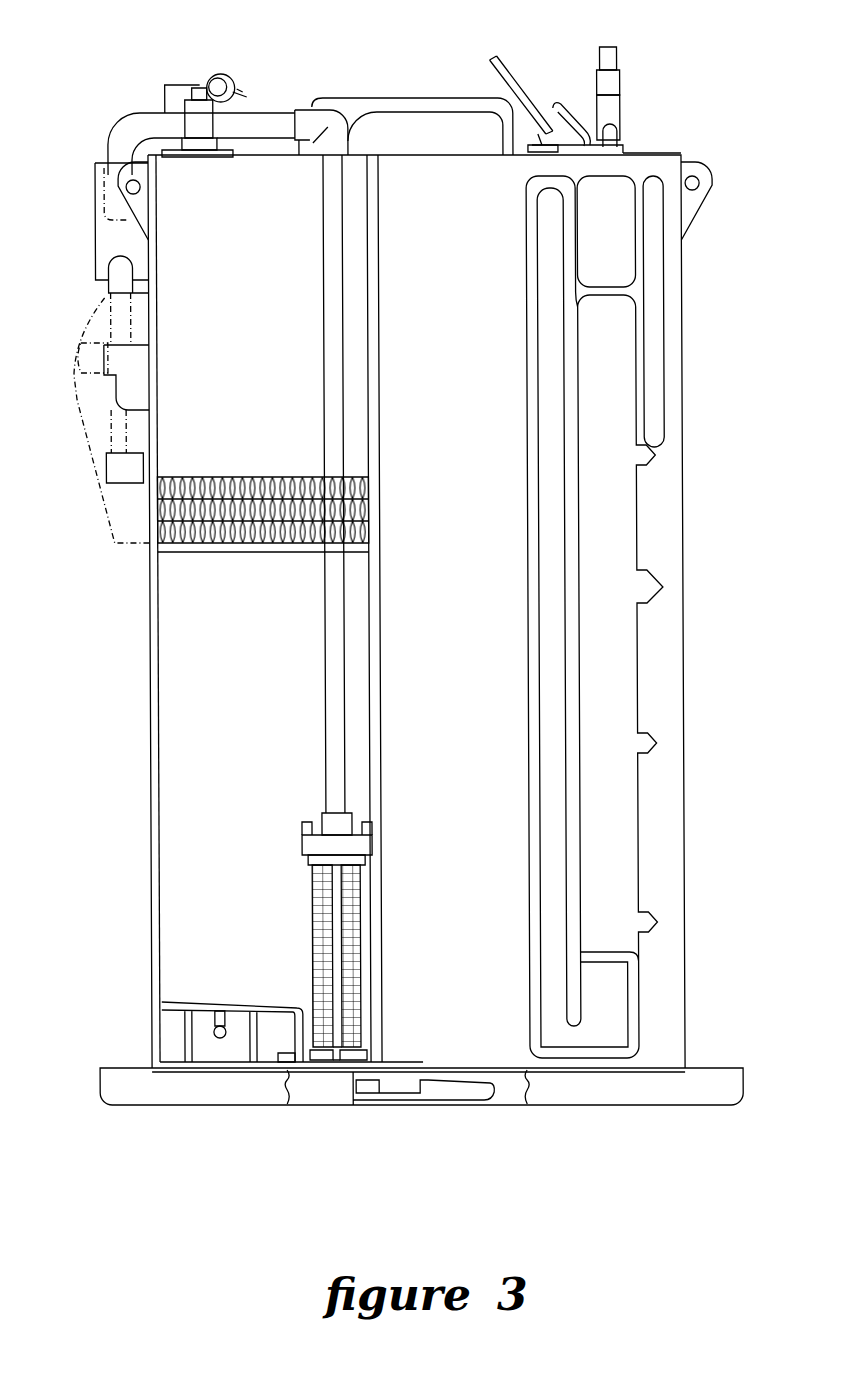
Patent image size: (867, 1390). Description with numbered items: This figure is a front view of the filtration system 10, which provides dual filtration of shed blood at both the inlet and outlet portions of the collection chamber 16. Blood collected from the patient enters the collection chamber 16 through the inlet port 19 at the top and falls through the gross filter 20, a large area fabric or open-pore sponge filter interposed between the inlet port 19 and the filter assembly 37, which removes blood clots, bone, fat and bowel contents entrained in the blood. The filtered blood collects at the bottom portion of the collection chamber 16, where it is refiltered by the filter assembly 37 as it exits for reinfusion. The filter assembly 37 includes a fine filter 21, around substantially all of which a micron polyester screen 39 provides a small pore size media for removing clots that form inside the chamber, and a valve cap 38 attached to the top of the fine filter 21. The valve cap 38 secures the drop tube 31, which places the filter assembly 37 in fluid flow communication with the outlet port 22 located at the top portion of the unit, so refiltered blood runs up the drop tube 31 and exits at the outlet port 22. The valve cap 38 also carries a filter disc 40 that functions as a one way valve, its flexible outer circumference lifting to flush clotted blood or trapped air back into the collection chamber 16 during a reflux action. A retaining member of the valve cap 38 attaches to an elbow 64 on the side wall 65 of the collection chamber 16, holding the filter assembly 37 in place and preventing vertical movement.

The filtration system 10 is at (190, 666).
The collection chamber 16 is at (148, 741).
The inlet port 19 is at (147, 147).
The gross filter 20 is at (226, 477).
The fine filter 21 is at (309, 905).
The outlet port 22 is at (350, 140).
The drop tube 31 is at (343, 672).
The filter assembly 37 is at (402, 998).
The valve cap 38 is at (359, 858).
The micron polyester screen 39 is at (352, 933).
The filter disc 40 is at (309, 837).
The elbow 64 is at (348, 815).
The side wall 65 is at (373, 737).